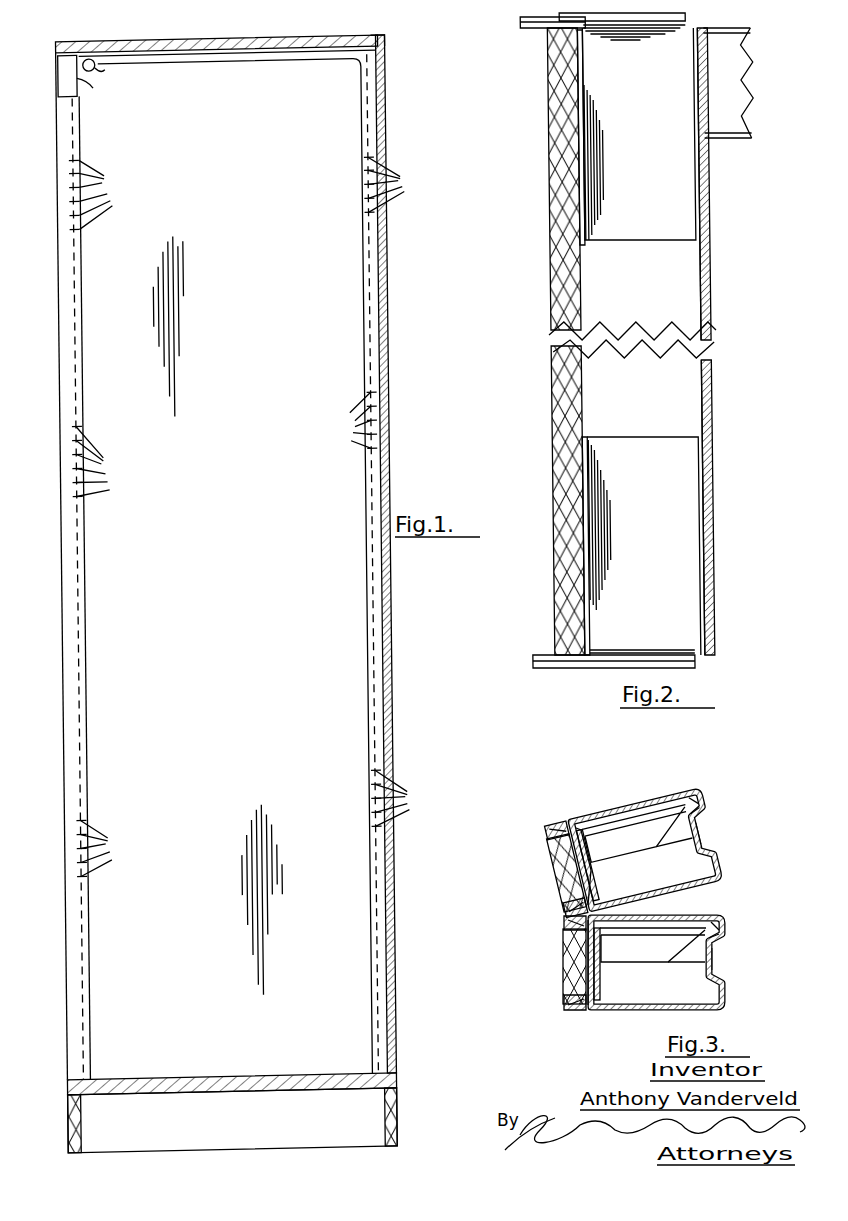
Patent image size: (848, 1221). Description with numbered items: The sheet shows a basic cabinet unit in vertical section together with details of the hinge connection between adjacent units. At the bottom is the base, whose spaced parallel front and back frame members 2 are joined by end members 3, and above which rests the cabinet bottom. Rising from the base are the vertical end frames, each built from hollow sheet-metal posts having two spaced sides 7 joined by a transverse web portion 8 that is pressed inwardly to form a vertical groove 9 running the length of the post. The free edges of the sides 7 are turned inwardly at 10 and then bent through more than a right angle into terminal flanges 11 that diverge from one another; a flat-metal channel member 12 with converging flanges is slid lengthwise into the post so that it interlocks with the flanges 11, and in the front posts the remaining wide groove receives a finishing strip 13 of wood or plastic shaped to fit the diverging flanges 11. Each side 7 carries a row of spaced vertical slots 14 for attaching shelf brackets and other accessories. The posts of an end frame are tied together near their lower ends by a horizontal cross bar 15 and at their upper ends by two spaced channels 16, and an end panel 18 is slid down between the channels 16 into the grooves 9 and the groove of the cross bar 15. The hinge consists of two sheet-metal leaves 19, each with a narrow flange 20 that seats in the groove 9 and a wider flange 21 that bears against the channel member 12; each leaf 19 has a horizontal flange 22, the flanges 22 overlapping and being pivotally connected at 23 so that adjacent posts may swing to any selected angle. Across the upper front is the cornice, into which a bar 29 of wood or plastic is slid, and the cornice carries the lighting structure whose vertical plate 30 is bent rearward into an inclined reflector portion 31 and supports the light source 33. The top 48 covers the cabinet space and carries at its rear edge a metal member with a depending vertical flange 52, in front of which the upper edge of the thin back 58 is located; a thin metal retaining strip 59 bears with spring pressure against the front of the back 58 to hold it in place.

In FIG. 1, the front and back frame member 2 is at (76, 1128).
In FIG. 1, the end members 3 is at (245, 1140).
In FIG. 1, the sides of post 7 is at (65, 265).
In FIG. 2, the sides of post 7 is at (686, 302).
In FIG. 3, the sides of post 7 is at (612, 812).
In FIG. 2, the transverse web portion 8 is at (711, 251).
In FIG. 3, the transverse web portion 8 is at (697, 802).
In FIG. 3, the vertical groove 9 is at (702, 830).
In FIG. 3, the inturned edge portions 10 is at (542, 842).
In FIG. 3, the terminal flanges 11 is at (578, 840).
In FIG. 2, the channel member 12 is at (580, 314).
In FIG. 3, the channel member 12 is at (578, 866).
In FIG. 2, the finishing strip 13 is at (556, 250).
In FIG. 3, the finishing strip 13 is at (548, 858).
In FIG. 1, the vertical slots 14 is at (248, 515).
In FIG. 1, the horizontal cross bar 15 is at (208, 1127).
In FIG. 1, the spaced channels 16 is at (230, 62).
In FIG. 2, the spaced channels 16 is at (736, 122).
In FIG. 1, the end panel 18 is at (108, 692).
In FIG. 2, the hinge leaves 19 is at (649, 234).
In FIG. 3, the hinge leaves 19 is at (640, 890).
In FIG. 2, the narrow flange 20 is at (695, 196).
In FIG. 3, the narrow flange 20 is at (712, 875).
In FIG. 2, the wide flange 21 is at (584, 190).
In FIG. 3, the wide flange 21 is at (572, 825).
In FIG. 2, the horizontal flange 22 is at (637, 20).
In FIG. 3, the horizontal flange 22 is at (640, 858).
In FIG. 2, the pivot 23 is at (545, 28).
In FIG. 1, the bar 29 is at (57, 72).
In FIG. 1, the vertical plate 30 is at (78, 86).
In FIG. 1, the reflector portion 31 is at (97, 58).
In FIG. 1, the light source 33 is at (97, 70).
In FIG. 1, the top 48 is at (307, 44).
In FIG. 1, the terminal vertical flange 52 is at (381, 48).
In FIG. 1, the back 58 is at (387, 349).
In FIG. 1, the metal retaining strip 59 is at (361, 64).